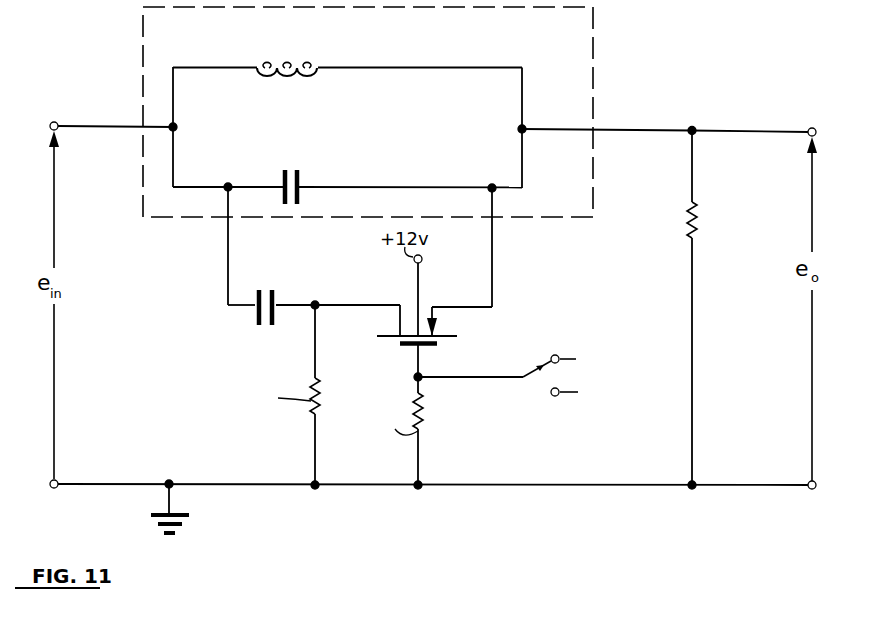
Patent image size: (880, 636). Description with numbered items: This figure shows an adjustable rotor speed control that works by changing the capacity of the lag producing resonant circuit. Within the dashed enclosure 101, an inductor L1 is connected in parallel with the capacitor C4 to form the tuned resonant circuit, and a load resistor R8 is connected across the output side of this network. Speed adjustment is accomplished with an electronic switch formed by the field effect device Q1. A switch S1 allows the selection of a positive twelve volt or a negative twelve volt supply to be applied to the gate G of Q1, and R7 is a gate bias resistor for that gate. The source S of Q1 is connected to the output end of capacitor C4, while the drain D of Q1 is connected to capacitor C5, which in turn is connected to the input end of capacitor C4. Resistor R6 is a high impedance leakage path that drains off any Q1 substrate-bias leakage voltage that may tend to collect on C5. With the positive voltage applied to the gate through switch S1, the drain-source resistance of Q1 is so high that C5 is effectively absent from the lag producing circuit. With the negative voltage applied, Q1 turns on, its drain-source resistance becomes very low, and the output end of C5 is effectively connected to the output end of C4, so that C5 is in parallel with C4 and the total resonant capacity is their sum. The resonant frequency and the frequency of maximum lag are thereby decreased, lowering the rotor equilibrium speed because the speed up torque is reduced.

The resonant tank circuit 101 is at (594, 72).
The inductor L1 is at (290, 66).
The capacitor C4 is at (300, 179).
The capacitor C5 is at (276, 290).
The resistor R6 is at (320, 388).
The gate bias resistor R7 is at (426, 402).
The load resistor R8 is at (698, 234).
The field effect device Q1 is at (409, 348).
The switch S1 is at (597, 368).